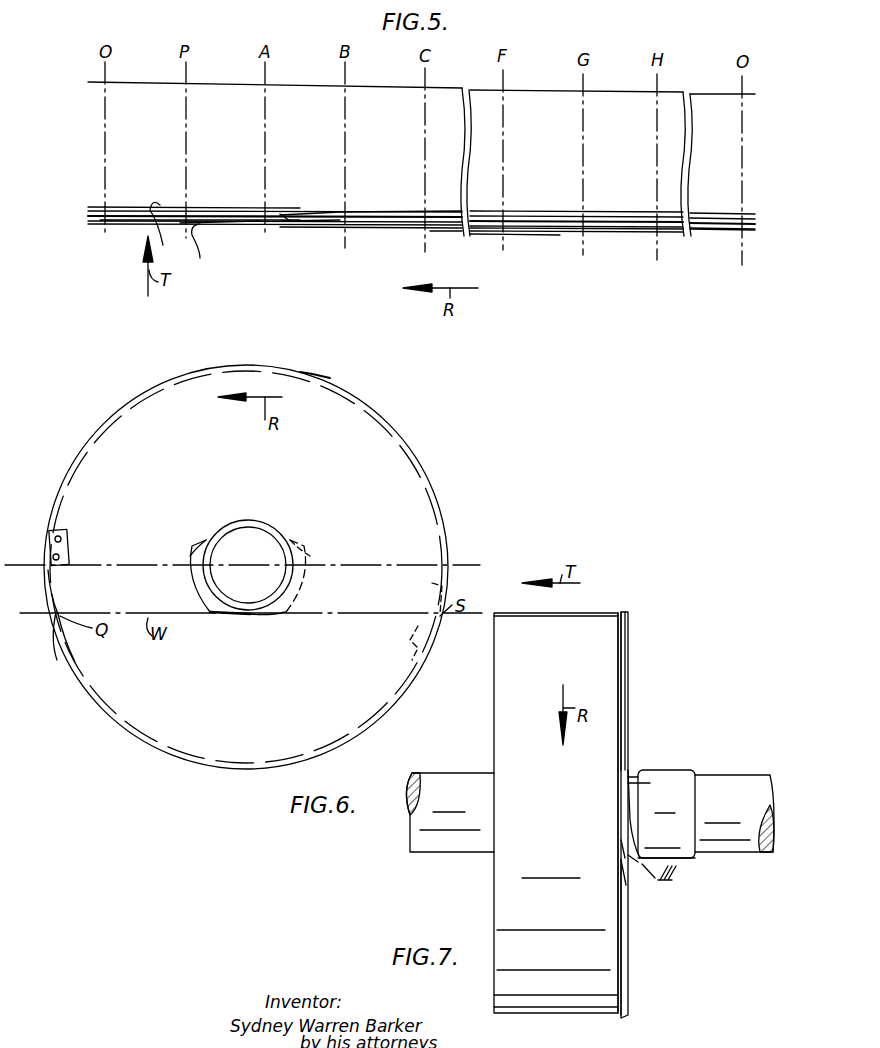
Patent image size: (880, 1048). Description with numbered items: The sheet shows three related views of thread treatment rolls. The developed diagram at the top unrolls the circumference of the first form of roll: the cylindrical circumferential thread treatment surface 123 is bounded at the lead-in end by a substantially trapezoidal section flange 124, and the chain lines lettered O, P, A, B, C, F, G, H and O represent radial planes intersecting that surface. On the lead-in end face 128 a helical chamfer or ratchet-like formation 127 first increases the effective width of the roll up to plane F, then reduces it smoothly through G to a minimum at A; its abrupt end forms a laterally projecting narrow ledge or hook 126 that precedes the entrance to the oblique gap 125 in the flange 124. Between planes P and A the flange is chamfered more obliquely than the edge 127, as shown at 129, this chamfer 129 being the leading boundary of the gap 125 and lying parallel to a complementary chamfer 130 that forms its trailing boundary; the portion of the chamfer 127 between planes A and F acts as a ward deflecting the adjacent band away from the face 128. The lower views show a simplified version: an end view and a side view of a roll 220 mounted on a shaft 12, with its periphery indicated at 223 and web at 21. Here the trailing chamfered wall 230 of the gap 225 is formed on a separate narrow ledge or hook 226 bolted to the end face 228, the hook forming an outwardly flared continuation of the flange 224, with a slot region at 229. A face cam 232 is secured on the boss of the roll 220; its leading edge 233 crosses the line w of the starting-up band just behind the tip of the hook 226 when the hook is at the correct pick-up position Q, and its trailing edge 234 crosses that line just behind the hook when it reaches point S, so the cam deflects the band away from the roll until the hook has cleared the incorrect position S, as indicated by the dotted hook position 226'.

In FIG. 7, the shaft 12 is at (445, 785).
In FIG. 7, the web 21 is at (680, 863).
In FIG. 5, the cylindrical circumferential thread treatment surface 123 is at (421, 187).
In FIG. 5, the flange 124 is at (448, 226).
In FIG. 5, the gap 125 is at (280, 223).
In FIG. 5, the narrow ledge or hook 126 is at (198, 250).
In FIG. 5, the helical chamfer 127 is at (130, 228).
In FIG. 5, the lead-in end face 128 is at (360, 231).
In FIG. 5, the chamfer 129 is at (243, 222).
In FIG. 5, the complementary chamfer 130 is at (298, 216).
In FIG. 6, the roll 220 is at (115, 410).
In FIG. 7, the roll 220 is at (492, 676).
In FIG. 6, the disc periphery 223 is at (335, 384).
In FIG. 7, the flange 224 is at (628, 612).
In FIG. 6, the gap 225 is at (57, 615).
In FIG. 7, the gap 225 is at (620, 850).
In FIG. 6, the narrow ledge or hook 226 is at (73, 595).
In FIG. 7, the narrow ledge or hook 226 is at (648, 883).
In FIG. 6, the dotted position of the hook 226' is at (413, 621).
In FIG. 6, the end face 228 is at (204, 545).
In FIG. 7, the end face 228 is at (626, 968).
In FIG. 7, the slot 229 is at (630, 860).
In FIG. 7, the trailing chamfered wall 230 is at (622, 838).
In FIG. 6, the face cam 232 is at (193, 553).
In FIG. 7, the face cam 232 is at (640, 843).
In FIG. 6, the leading edge 233 is at (290, 545).
In FIG. 7, the leading edge 233 is at (643, 860).
In FIG. 6, the trailing edge 234 is at (202, 540).
In FIG. 7, the trailing edge 234 is at (659, 784).